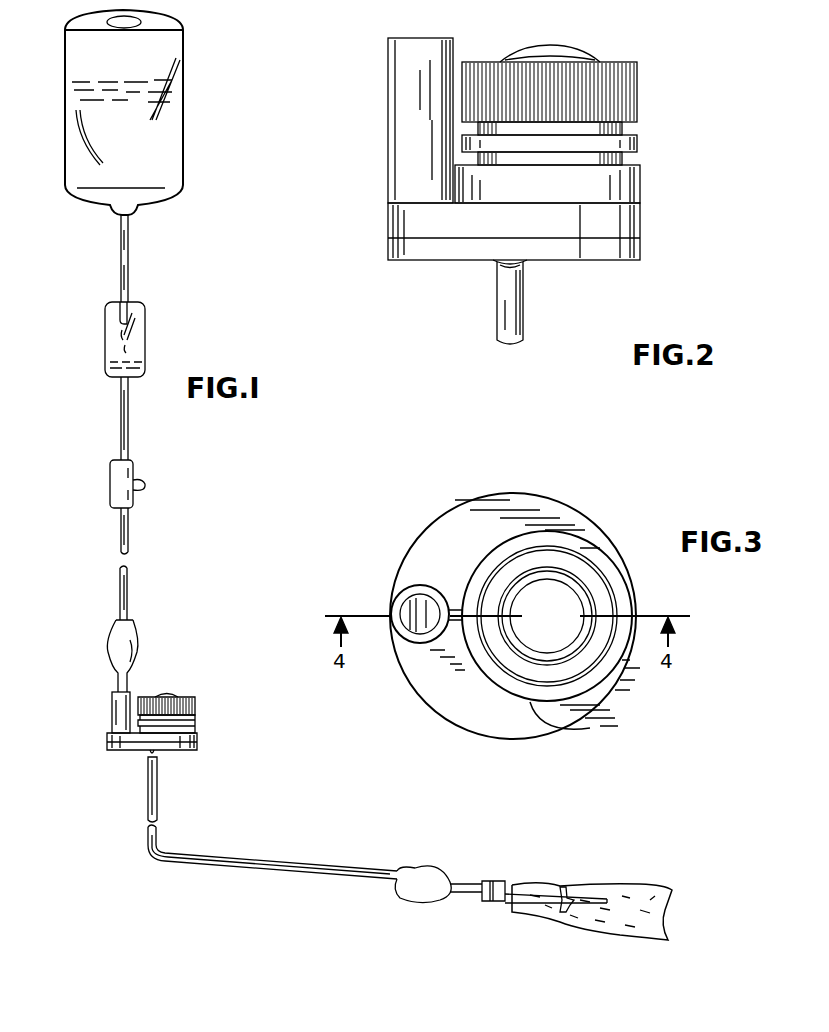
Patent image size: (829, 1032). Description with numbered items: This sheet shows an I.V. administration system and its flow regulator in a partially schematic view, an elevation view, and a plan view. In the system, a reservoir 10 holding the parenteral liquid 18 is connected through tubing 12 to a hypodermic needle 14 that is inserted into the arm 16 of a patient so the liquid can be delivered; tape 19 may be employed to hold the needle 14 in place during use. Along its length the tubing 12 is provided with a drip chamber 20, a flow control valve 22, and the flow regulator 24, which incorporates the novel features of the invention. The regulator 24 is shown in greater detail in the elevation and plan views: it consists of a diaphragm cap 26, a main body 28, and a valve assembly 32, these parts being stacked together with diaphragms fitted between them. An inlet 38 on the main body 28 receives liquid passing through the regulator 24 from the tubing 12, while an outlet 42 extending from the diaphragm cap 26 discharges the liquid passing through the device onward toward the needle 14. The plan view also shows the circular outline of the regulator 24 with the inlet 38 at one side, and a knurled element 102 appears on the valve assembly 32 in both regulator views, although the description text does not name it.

In FIG. 1, the reservoir 10 is at (178, 70).
In FIG. 1, the tubing 12 is at (120, 578).
In FIG. 1, the hypodermic needle 14 is at (540, 910).
In FIG. 1, the arm 16 is at (622, 885).
In FIG. 1, the parenteral liquid 18 is at (134, 146).
In FIG. 1, the tape 19 is at (566, 887).
In FIG. 1, the drip chamber 20 is at (148, 338).
In FIG. 1, the flow control valve 22 is at (112, 478).
In FIG. 1, the flow regulator 24 is at (96, 728).
In FIG. 2, the flow regulator 24 is at (428, 285).
In FIG. 3, the flow regulator 24 is at (575, 486).
In FIG. 2, the diaphragm cap 26 is at (592, 266).
In FIG. 2, the main body 28 is at (384, 218).
In FIG. 2, the valve assembly 32 is at (640, 142).
In FIG. 1, the inlet 38 is at (110, 703).
In FIG. 2, the inlet 38 is at (386, 95).
In FIG. 3, the inlet 38 is at (400, 590).
In FIG. 1, the outlet 42 is at (160, 756).
In FIG. 2, the outlet 42 is at (518, 310).
In FIG. 2, the knob 102 is at (590, 60).
In FIG. 3, the knob 102 is at (560, 730).